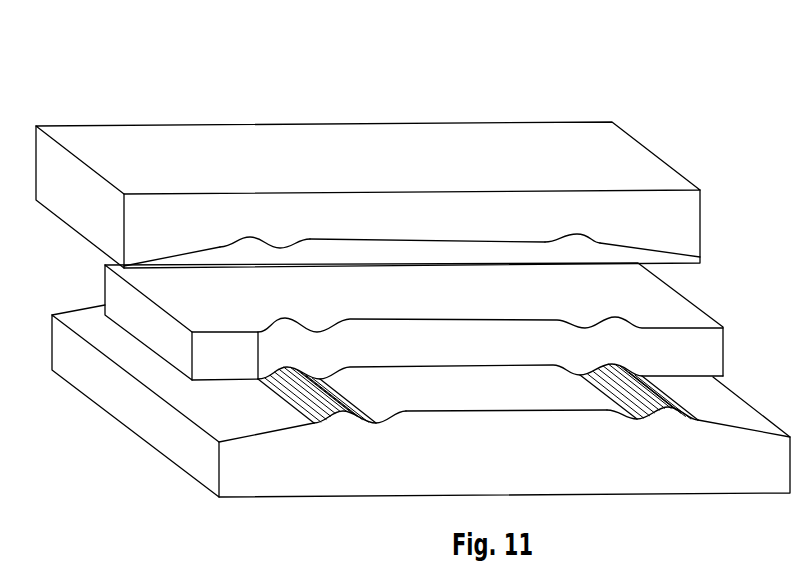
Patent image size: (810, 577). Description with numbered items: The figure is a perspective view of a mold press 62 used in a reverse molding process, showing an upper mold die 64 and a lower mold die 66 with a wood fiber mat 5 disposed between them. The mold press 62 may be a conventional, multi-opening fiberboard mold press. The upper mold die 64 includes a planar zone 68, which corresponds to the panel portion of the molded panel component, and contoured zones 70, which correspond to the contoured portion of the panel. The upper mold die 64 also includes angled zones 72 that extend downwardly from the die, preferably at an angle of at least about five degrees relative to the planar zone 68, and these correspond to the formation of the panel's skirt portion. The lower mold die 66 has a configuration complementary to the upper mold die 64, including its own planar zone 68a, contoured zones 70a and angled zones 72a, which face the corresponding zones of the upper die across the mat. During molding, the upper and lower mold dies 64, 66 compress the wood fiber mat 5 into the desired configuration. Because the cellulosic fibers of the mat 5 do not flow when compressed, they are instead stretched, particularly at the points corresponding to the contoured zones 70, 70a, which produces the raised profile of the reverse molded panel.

The mold press 62 is at (520, 63).
The upper mold die 64 is at (658, 172).
The wood fiber mat 5 is at (697, 316).
The lower mold die 66 is at (650, 493).
The planar zone 68 is at (410, 237).
The contoured zones 70 is at (250, 237).
The angled zones 72 is at (172, 257).
The planar zone 68a is at (475, 392).
The contoured zones 70a is at (290, 383).
The angled zones 72a is at (213, 403).